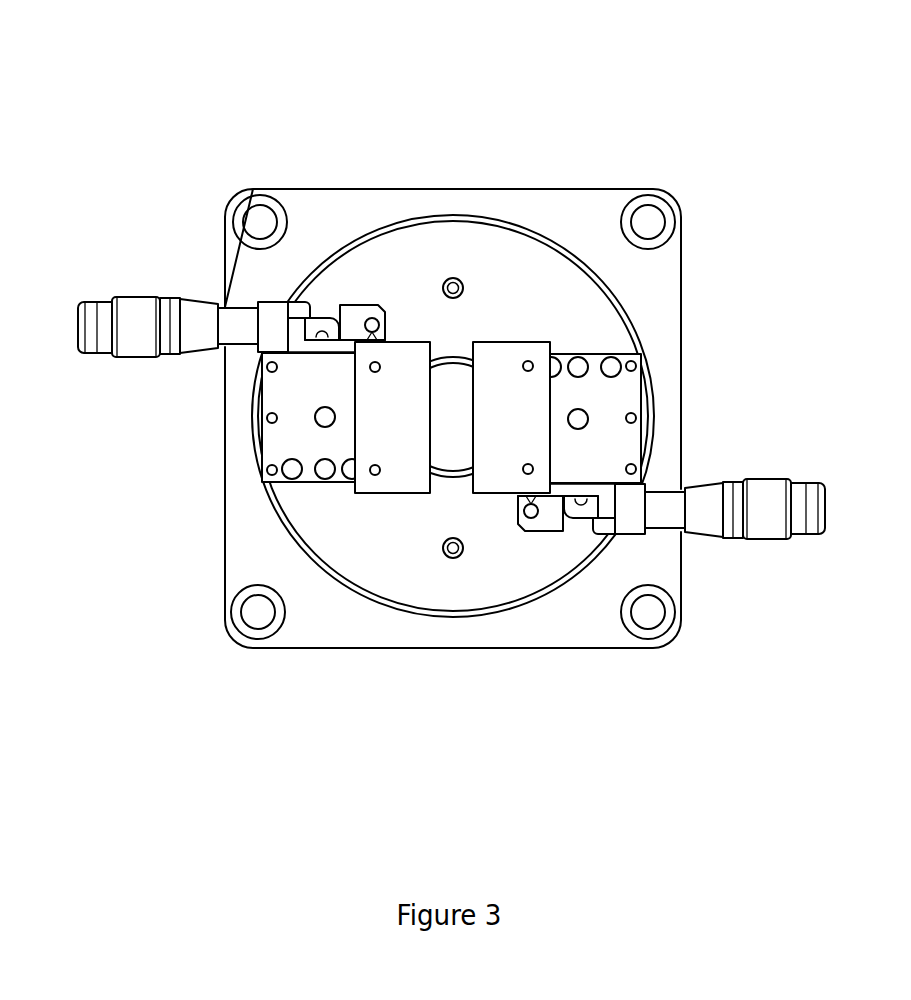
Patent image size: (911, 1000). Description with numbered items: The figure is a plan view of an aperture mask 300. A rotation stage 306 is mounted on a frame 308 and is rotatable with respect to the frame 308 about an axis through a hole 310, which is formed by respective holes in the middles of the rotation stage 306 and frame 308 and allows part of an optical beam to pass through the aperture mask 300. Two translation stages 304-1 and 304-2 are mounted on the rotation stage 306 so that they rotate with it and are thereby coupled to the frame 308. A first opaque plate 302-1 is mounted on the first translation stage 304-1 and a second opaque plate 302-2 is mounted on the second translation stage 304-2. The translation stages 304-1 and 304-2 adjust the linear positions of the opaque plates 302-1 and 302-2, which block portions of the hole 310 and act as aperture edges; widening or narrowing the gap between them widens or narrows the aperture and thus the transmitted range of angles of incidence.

The aperture mask 300 is at (219, 56).
The first opaque plate 302-1 is at (388, 435).
The second opaque plate 302-2 is at (493, 432).
The first translation stage 304-1 is at (292, 432).
The second translation stage 304-2 is at (613, 428).
The rotation stage 306 is at (440, 245).
The frame 308 is at (588, 228).
The hole 310 is at (453, 417).